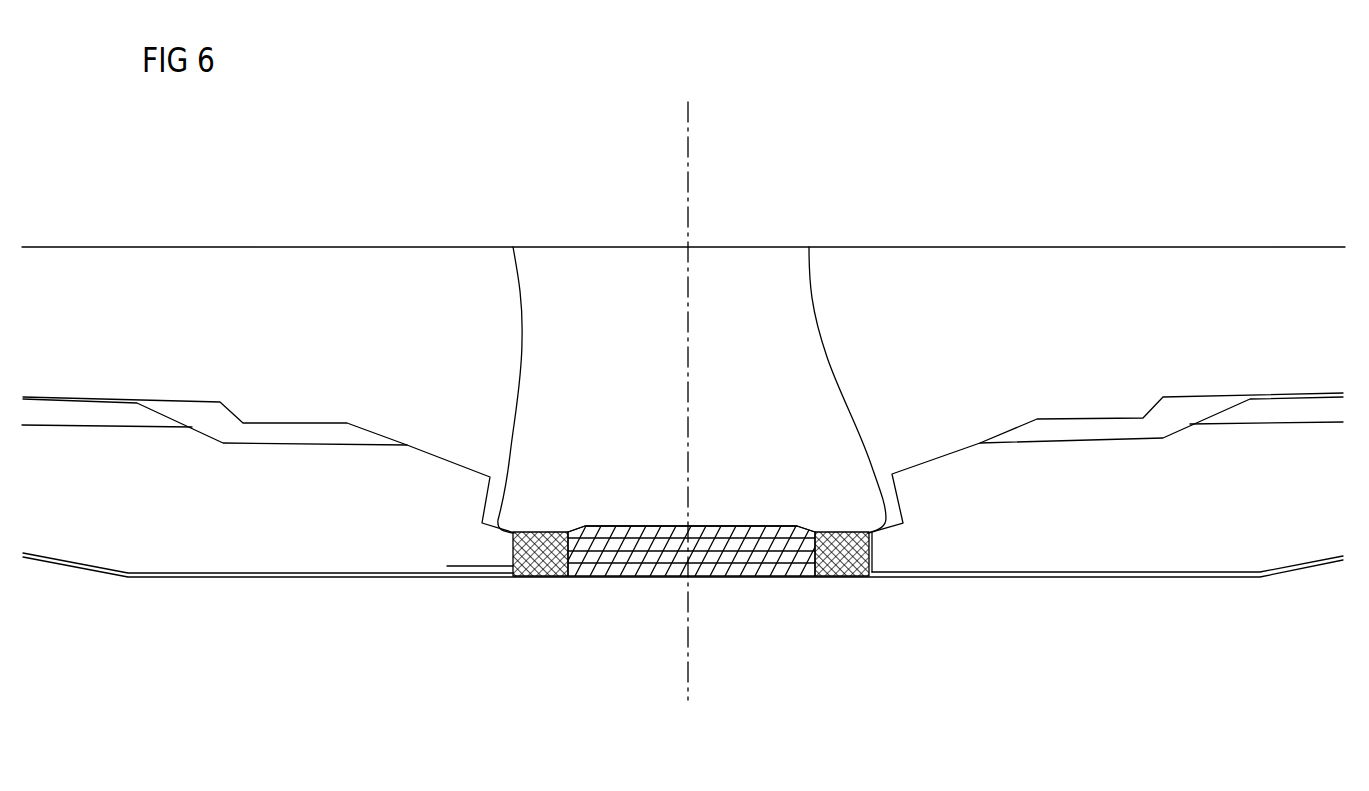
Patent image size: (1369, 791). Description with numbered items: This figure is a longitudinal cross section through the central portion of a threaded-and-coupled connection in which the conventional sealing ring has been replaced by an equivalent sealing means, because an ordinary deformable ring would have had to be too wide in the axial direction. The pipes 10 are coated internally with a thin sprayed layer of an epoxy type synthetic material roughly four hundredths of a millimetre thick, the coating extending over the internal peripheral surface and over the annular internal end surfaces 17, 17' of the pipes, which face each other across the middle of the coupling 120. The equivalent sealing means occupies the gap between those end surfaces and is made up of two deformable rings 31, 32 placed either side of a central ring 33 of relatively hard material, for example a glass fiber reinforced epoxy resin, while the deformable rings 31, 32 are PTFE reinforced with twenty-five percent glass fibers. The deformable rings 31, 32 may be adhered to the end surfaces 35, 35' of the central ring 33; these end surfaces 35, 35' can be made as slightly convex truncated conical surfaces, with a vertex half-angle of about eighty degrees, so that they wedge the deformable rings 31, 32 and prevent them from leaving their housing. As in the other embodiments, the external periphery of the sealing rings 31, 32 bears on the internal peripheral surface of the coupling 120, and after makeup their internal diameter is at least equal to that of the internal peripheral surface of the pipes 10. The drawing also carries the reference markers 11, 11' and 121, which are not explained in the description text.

The coupling 120 is at (257, 310).
The annular internal end surface 17' is at (529, 336).
The annular internal end surface 17 is at (847, 336).
The pipe 10 is at (190, 512).
The left conductor layer 11' is at (415, 640).
The right conductor layer 11 is at (936, 624).
The deformable ring 32 is at (533, 562).
The end surface of central ring 35' is at (542, 623).
The end surface of central ring 35 is at (836, 623).
The deformable ring 31 is at (853, 560).
The central ring 33 is at (722, 562).
The upper face of component 121 is at (635, 527).